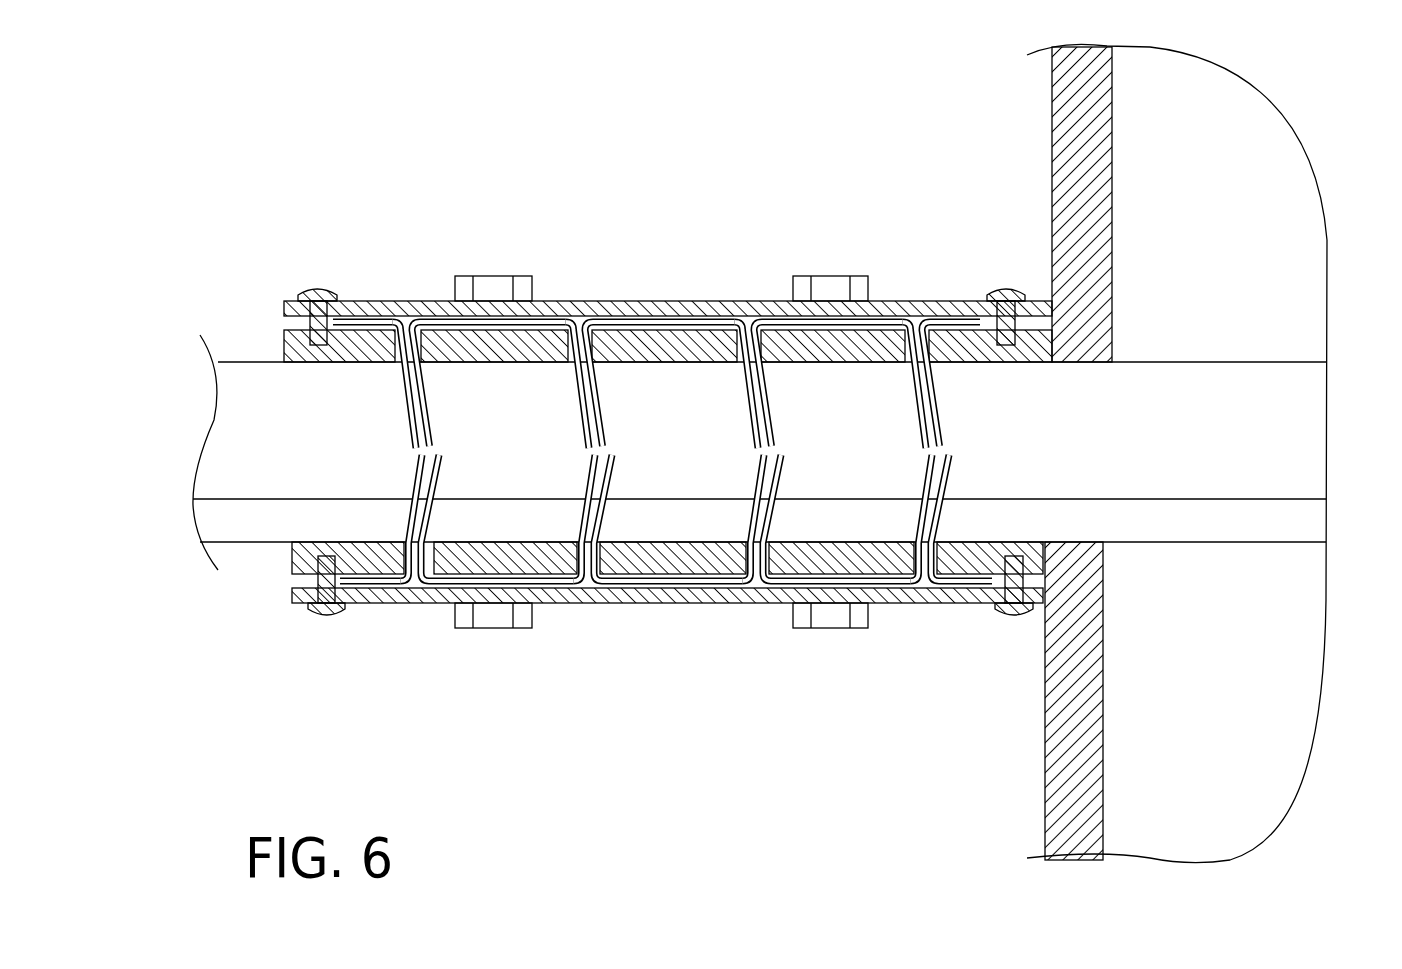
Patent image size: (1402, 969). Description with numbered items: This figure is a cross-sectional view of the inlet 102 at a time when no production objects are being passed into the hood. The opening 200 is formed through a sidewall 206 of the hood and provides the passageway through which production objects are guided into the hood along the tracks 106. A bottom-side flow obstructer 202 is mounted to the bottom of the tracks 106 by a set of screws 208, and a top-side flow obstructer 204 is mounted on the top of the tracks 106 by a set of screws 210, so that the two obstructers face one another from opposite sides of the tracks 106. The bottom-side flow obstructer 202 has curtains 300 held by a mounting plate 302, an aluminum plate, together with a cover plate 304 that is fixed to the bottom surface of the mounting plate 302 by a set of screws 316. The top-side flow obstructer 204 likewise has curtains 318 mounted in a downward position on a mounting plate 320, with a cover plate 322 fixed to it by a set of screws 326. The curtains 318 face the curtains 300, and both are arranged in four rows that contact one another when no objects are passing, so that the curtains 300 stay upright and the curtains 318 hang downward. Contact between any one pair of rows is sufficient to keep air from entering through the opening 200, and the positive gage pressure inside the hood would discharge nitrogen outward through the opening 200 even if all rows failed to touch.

The inlet 102 is at (305, 163).
The tracks 106 is at (250, 512).
The opening 200 is at (1146, 428).
The bottom-side flow obstructer 202 is at (234, 580).
The top-side flow obstructer 204 is at (222, 322).
The sidewall 206 is at (1065, 98).
The screws 208 is at (490, 617).
The screws 210 is at (488, 285).
The curtains 300 is at (722, 580).
The mounting plate 302 is at (1038, 562).
The cover plate 304 is at (652, 592).
The screws 316 is at (330, 610).
The curtains 318 is at (790, 302).
The mounting plate 320 is at (1030, 347).
The cover plate 322 is at (660, 302).
The screws 326 is at (319, 294).